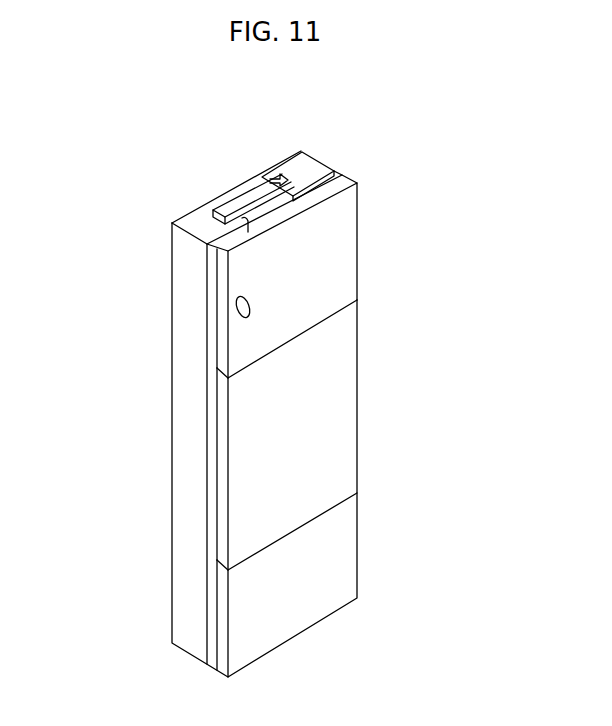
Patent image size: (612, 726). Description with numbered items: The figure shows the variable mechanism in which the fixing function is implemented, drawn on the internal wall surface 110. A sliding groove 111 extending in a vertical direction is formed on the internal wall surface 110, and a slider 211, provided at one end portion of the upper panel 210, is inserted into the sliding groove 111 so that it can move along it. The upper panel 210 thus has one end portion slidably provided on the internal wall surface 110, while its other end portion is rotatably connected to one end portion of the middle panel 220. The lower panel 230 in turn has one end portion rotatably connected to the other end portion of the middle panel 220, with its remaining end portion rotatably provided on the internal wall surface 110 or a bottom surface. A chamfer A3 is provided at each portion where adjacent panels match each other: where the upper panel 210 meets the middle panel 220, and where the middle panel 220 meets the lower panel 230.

The internal wall surface 110 is at (187, 297).
The sliding groove 111 is at (232, 204).
The slider 211 is at (276, 183).
The upper panel 210 is at (347, 267).
The middle panel 220 is at (348, 412).
The lower panel 230 is at (348, 553).
The chamfer A3 is at (227, 377).